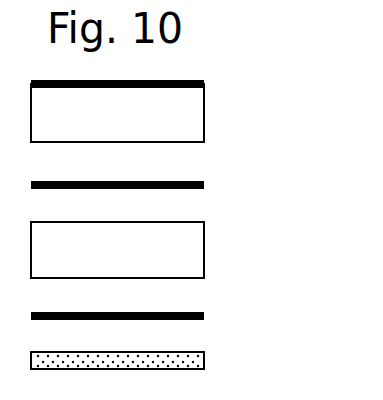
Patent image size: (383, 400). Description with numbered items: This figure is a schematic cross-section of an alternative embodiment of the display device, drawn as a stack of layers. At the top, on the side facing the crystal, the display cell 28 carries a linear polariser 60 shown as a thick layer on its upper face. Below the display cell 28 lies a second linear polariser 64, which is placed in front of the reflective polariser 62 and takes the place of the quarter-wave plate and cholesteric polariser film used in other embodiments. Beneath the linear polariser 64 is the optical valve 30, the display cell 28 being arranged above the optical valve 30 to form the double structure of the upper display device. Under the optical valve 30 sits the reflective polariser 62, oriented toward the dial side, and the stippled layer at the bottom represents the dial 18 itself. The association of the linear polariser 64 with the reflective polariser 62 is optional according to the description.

The linear polariser 60 is at (204, 84).
The display cell 28 is at (187, 123).
The linear polariser 64 is at (204, 185).
The optical valve 30 is at (187, 260).
The reflective polariser 62 is at (204, 316).
The dial 18 is at (204, 361).